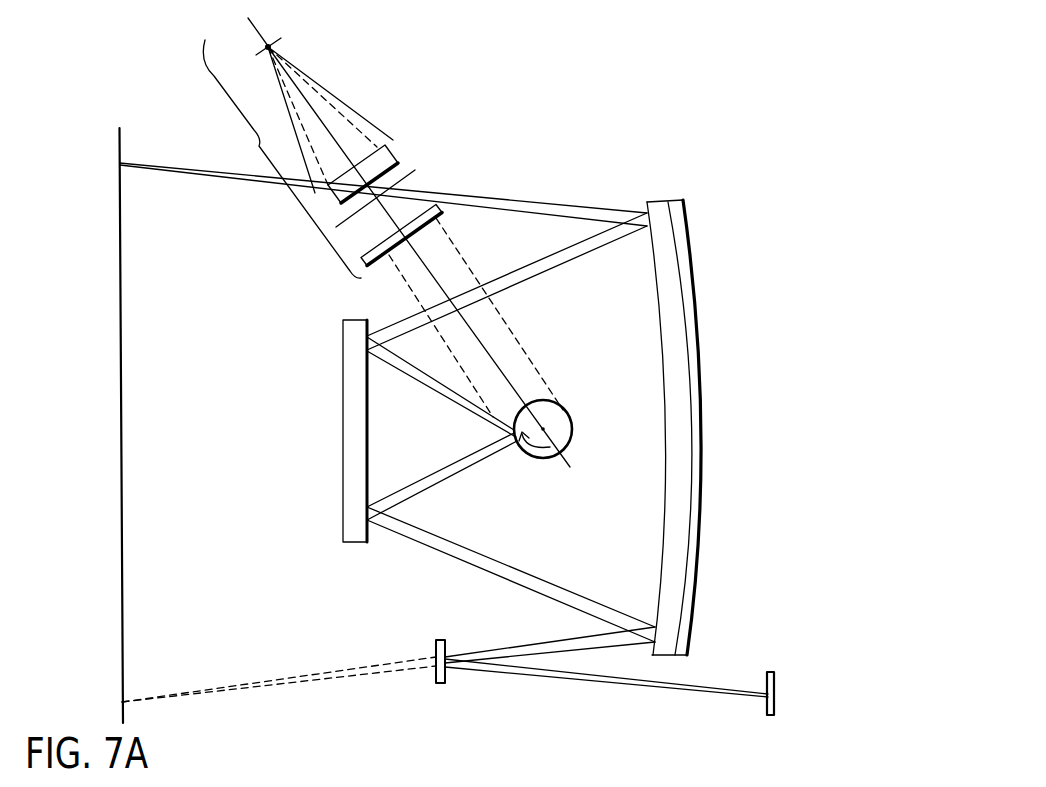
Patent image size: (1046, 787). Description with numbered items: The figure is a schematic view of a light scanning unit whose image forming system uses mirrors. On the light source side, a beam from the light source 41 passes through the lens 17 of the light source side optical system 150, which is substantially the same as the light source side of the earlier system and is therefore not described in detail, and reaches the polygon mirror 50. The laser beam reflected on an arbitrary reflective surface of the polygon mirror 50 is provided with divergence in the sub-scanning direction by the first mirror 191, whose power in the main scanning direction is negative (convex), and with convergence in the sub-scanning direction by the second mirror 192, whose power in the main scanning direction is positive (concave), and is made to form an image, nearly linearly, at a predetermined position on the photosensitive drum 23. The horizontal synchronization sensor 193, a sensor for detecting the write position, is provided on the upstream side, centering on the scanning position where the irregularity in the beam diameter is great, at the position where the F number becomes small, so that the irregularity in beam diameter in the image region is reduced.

The light source 41 is at (270, 43).
The illumination optical system 150 is at (282, 159).
The lens unit 17 is at (443, 212).
The second mirror 192 is at (700, 437).
The first mirror 191 is at (345, 485).
The polygon mirror 50 is at (563, 428).
The photosensitive drum 23 is at (122, 458).
The horizontal synchronization sensor 193 is at (774, 680).